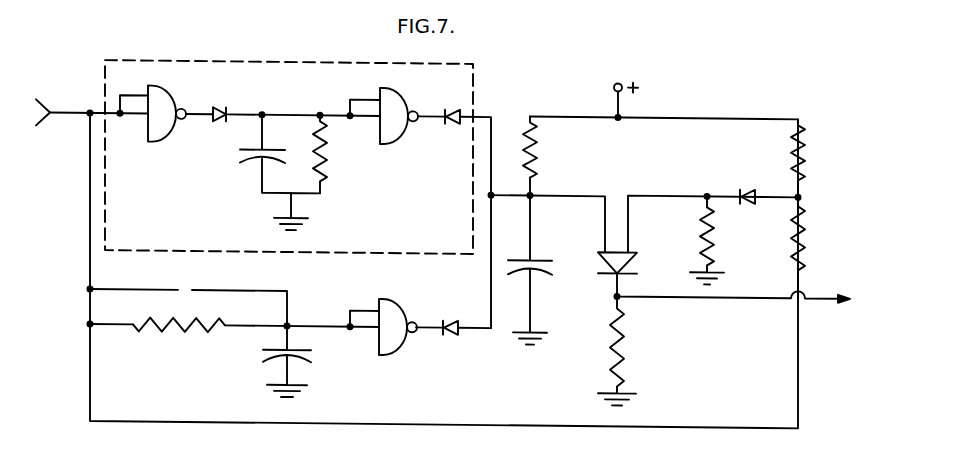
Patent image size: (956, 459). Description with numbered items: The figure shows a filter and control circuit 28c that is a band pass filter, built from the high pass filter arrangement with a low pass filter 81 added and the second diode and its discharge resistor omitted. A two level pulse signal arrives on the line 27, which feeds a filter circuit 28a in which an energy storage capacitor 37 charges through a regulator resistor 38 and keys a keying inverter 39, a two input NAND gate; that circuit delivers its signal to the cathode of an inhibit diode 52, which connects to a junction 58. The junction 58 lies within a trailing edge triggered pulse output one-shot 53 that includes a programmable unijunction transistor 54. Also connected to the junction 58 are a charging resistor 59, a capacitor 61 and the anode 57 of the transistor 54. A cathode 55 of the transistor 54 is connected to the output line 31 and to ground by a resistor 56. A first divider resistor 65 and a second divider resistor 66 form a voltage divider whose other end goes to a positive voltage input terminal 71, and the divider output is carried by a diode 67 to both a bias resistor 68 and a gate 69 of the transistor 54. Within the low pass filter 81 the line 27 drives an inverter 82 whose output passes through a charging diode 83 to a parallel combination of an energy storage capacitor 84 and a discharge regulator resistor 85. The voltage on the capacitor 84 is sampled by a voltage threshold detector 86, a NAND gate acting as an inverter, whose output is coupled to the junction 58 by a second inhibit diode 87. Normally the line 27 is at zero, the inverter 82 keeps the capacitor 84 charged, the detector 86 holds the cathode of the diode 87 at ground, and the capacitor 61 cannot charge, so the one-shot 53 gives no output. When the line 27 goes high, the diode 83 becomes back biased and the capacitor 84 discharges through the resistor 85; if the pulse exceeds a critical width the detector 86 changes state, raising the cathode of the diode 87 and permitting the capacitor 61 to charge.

The line 27 is at (65, 109).
The low pass filter 81 is at (327, 59).
The filter and control circuit 28c is at (341, 136).
The inverter 82 is at (163, 124).
The charging diode 83 is at (221, 123).
The energy storage capacitor 84 is at (256, 158).
The discharge regulator resistor 85 is at (328, 150).
The voltage threshold detector 86 is at (397, 121).
The second inhibit diode 87 is at (457, 120).
The pulse output one-shot 53 is at (679, 229).
The positive voltage input terminal 71 is at (613, 83).
The charging resistor 59 is at (540, 124).
The junction 58 is at (532, 188).
The capacitor 61 is at (543, 253).
The programmable unijunction transistor 54 is at (604, 251).
The anode 57 is at (603, 206).
The gate 69 is at (631, 207).
The cathode 55 is at (626, 269).
The resistor 56 is at (628, 338).
The second divider resistor 66 is at (806, 148).
The diode 67 is at (748, 181).
The bias resistor 68 is at (714, 232).
The first divider resistor 65 is at (805, 246).
The output line 31 is at (817, 292).
The regulator resistor 38 is at (185, 334).
The energy storage capacitor 37 is at (306, 355).
The keying inverter 39 is at (389, 309).
The filter circuit 28a is at (406, 344).
The inhibit diode 52 is at (453, 329).